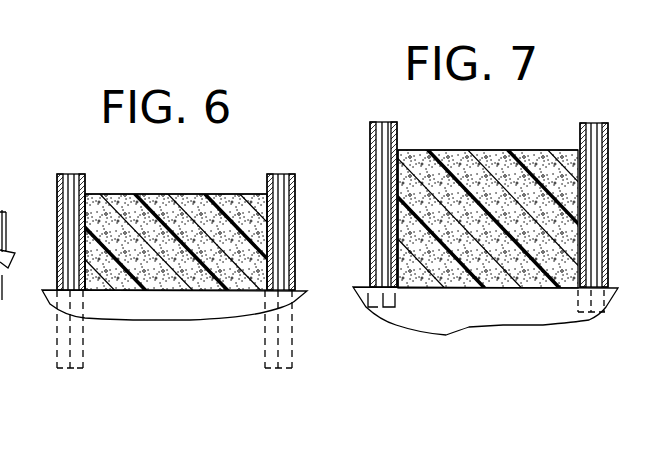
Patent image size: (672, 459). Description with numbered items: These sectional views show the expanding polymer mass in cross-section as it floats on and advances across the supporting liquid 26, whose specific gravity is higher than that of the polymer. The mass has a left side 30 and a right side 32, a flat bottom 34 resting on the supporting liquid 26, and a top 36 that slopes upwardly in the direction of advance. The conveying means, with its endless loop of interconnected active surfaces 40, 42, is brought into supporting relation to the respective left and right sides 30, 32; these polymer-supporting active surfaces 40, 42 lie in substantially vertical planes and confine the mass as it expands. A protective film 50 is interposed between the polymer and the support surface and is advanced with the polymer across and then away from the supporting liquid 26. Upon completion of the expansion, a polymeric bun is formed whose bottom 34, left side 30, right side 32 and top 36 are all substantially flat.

In FIG. 6, the supporting liquid 26 is at (200, 277).
In FIG. 7, the supporting liquid 26 is at (500, 282).
In FIG. 6, the left side 30 is at (8, 237).
In FIG. 7, the left side 30 is at (581, 202).
In FIG. 6, the right side 32 is at (83, 223).
In FIG. 7, the right side 32 is at (398, 205).
In FIG. 6, the flat bottom 34 is at (127, 290).
In FIG. 7, the flat bottom 34 is at (436, 288).
In FIG. 6, the top 36 is at (158, 195).
In FIG. 7, the top 36 is at (493, 150).
In FIG. 6, the active surface 40 is at (247, 210).
In FIG. 7, the active surface 40 is at (577, 165).
In FIG. 6, the active surface 42 is at (95, 195).
In FIG. 7, the active surface 42 is at (402, 160).
In FIG. 6, the protective film 50 is at (170, 290).
In FIG. 7, the protective film 50 is at (461, 290).